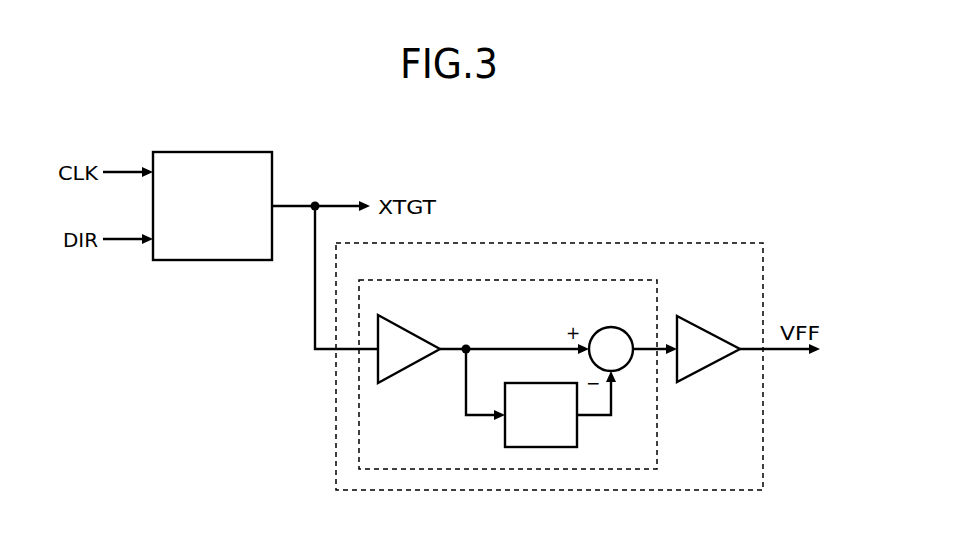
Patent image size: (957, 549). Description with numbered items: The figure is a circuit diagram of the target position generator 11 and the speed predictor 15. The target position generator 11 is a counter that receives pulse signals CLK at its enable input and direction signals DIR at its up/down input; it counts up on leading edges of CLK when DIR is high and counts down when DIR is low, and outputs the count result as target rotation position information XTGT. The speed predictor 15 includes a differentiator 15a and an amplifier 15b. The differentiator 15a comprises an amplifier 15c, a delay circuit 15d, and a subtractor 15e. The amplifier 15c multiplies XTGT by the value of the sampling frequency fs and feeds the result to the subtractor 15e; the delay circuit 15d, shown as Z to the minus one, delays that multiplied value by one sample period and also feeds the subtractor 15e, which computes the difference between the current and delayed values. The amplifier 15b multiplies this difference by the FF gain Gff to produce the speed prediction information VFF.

The target position generator 11 is at (236, 152).
The speed predictor 15 is at (699, 244).
The differentiator 15a is at (603, 281).
The amplifier 15b is at (696, 333).
The amplifier 15c is at (409, 336).
The delay circuit 15d is at (577, 436).
The subtractor 15e is at (603, 328).